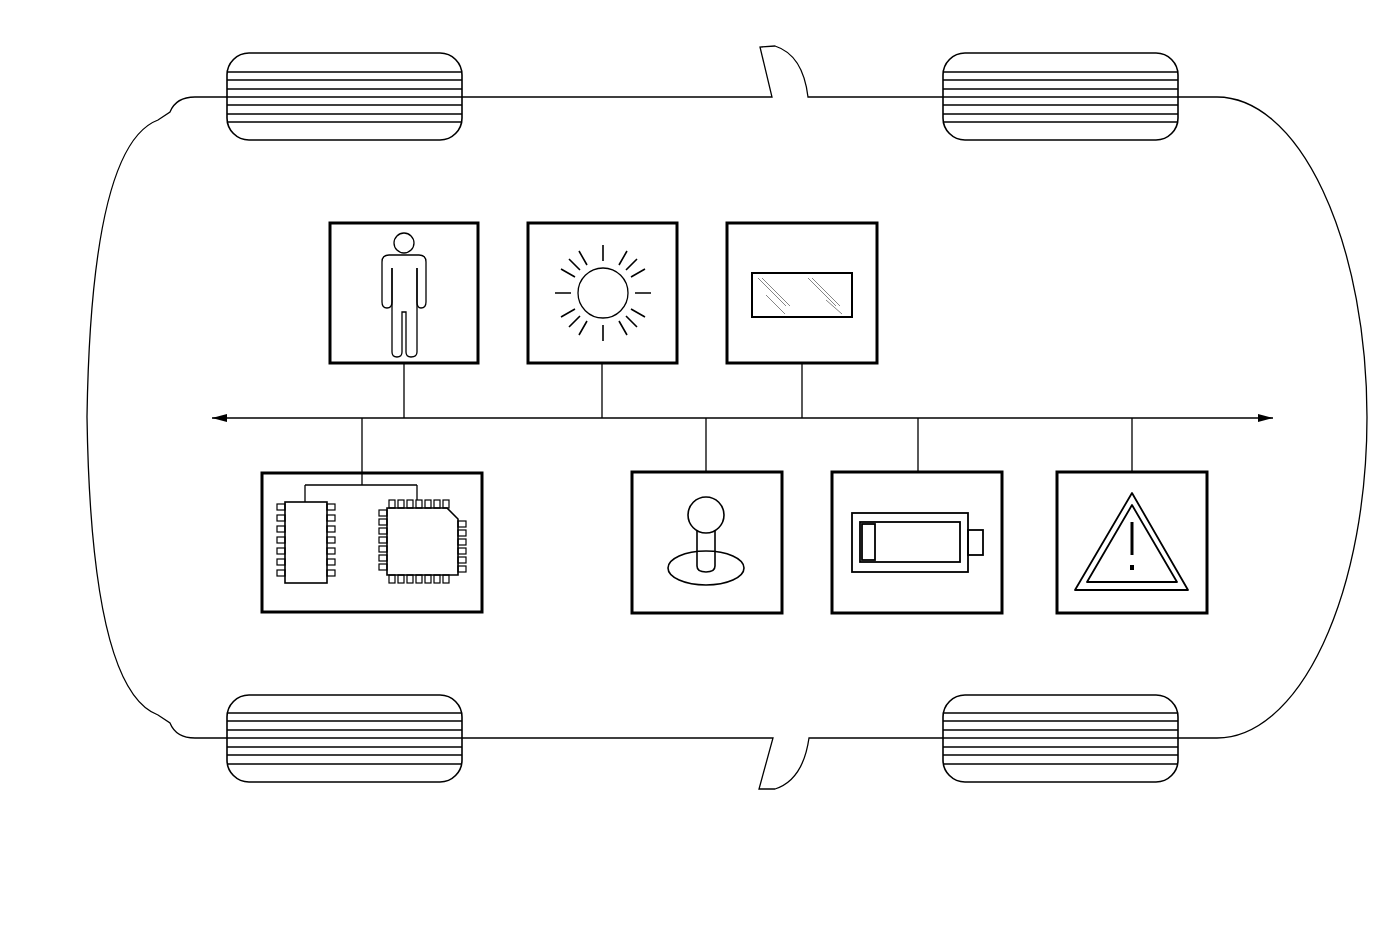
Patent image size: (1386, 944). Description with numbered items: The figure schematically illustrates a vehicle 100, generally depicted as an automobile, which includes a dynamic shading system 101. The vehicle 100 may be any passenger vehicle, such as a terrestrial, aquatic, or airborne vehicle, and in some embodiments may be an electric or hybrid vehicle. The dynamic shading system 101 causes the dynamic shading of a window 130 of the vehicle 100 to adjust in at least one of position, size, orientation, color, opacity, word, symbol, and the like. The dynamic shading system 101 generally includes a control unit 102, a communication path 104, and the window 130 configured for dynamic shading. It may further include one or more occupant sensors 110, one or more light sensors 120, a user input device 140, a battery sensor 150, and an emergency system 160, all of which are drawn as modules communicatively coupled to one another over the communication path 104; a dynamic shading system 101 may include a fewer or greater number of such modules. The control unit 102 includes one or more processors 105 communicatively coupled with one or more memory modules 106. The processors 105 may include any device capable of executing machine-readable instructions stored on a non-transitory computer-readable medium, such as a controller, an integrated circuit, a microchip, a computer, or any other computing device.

The vehicle 100 is at (1286, 105).
The dynamic shading system 101 is at (158, 167).
The control unit 102 is at (262, 540).
The communication path 104 is at (246, 418).
The processors 105 is at (305, 583).
The memory modules 106 is at (405, 583).
The occupant sensors 110 is at (404, 223).
The light sensors 120 is at (602, 223).
The window 130 is at (802, 223).
The user input device 140 is at (706, 615).
The battery sensor 150 is at (918, 615).
The emergency system 160 is at (1132, 615).